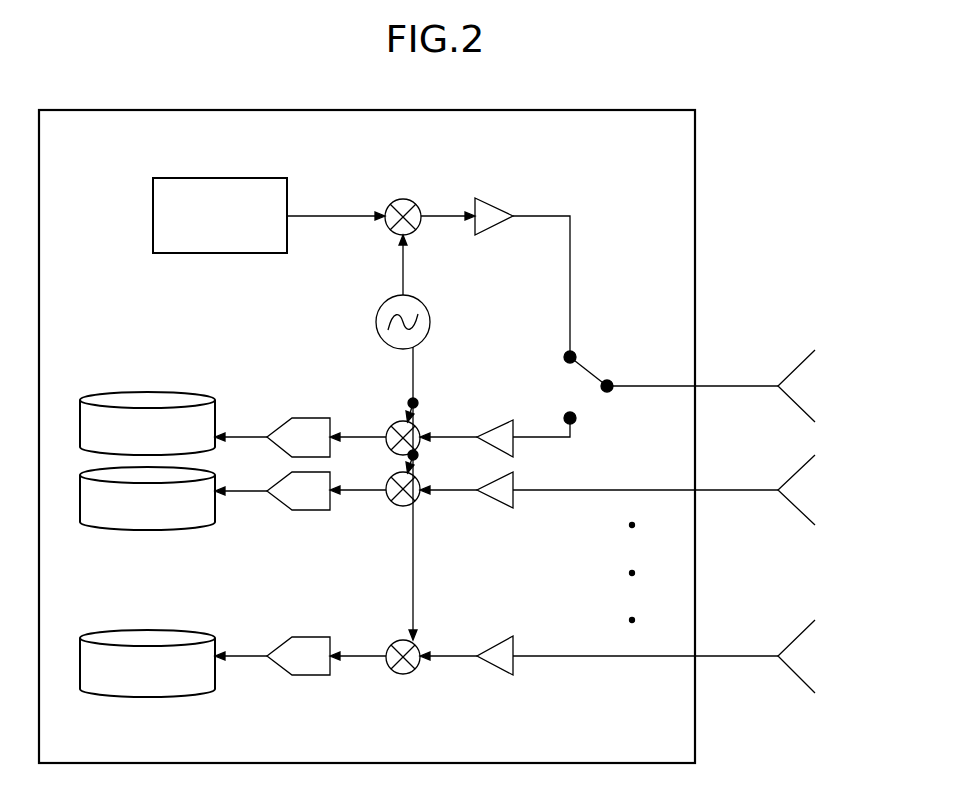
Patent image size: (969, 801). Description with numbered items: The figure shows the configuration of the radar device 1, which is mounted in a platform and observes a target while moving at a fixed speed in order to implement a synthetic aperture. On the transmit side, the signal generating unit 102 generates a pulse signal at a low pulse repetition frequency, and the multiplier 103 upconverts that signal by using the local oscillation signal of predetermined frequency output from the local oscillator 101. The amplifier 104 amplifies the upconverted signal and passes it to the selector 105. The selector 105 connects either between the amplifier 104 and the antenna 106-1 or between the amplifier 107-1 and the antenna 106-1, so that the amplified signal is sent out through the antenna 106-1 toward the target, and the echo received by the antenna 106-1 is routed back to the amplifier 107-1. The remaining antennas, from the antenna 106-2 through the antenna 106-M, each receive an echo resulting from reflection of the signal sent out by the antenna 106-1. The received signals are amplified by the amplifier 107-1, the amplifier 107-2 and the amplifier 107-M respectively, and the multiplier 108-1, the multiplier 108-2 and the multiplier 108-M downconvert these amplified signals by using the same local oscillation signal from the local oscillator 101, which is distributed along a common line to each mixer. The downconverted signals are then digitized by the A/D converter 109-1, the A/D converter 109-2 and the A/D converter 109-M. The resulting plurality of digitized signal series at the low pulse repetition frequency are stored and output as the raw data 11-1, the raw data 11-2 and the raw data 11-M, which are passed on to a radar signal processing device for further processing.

The radar device 1 is at (78, 108).
The local oscillator 101 is at (430, 322).
The signal generating unit 102 is at (222, 177).
The multiplier 103 is at (403, 198).
The amplifier 104 is at (492, 199).
The selector 105 is at (594, 366).
The antenna 106-1 is at (796, 370).
The antenna 106-2 is at (796, 470).
The antenna 106-M is at (797, 638).
The amplifier 107-1 is at (496, 423).
The amplifier 107-2 is at (496, 509).
The amplifier 107-M is at (496, 677).
The multiplier 108-1 is at (394, 424).
The multiplier 108-2 is at (394, 505).
The multiplier 108-M is at (403, 675).
The A/D converter 109-1 is at (300, 417).
The A/D converter 109-2 is at (300, 511).
The A/D converter 109-M is at (305, 676).
The raw data 11-1 is at (147, 391).
The raw data 11-2 is at (147, 532).
The raw data 11-M is at (147, 699).